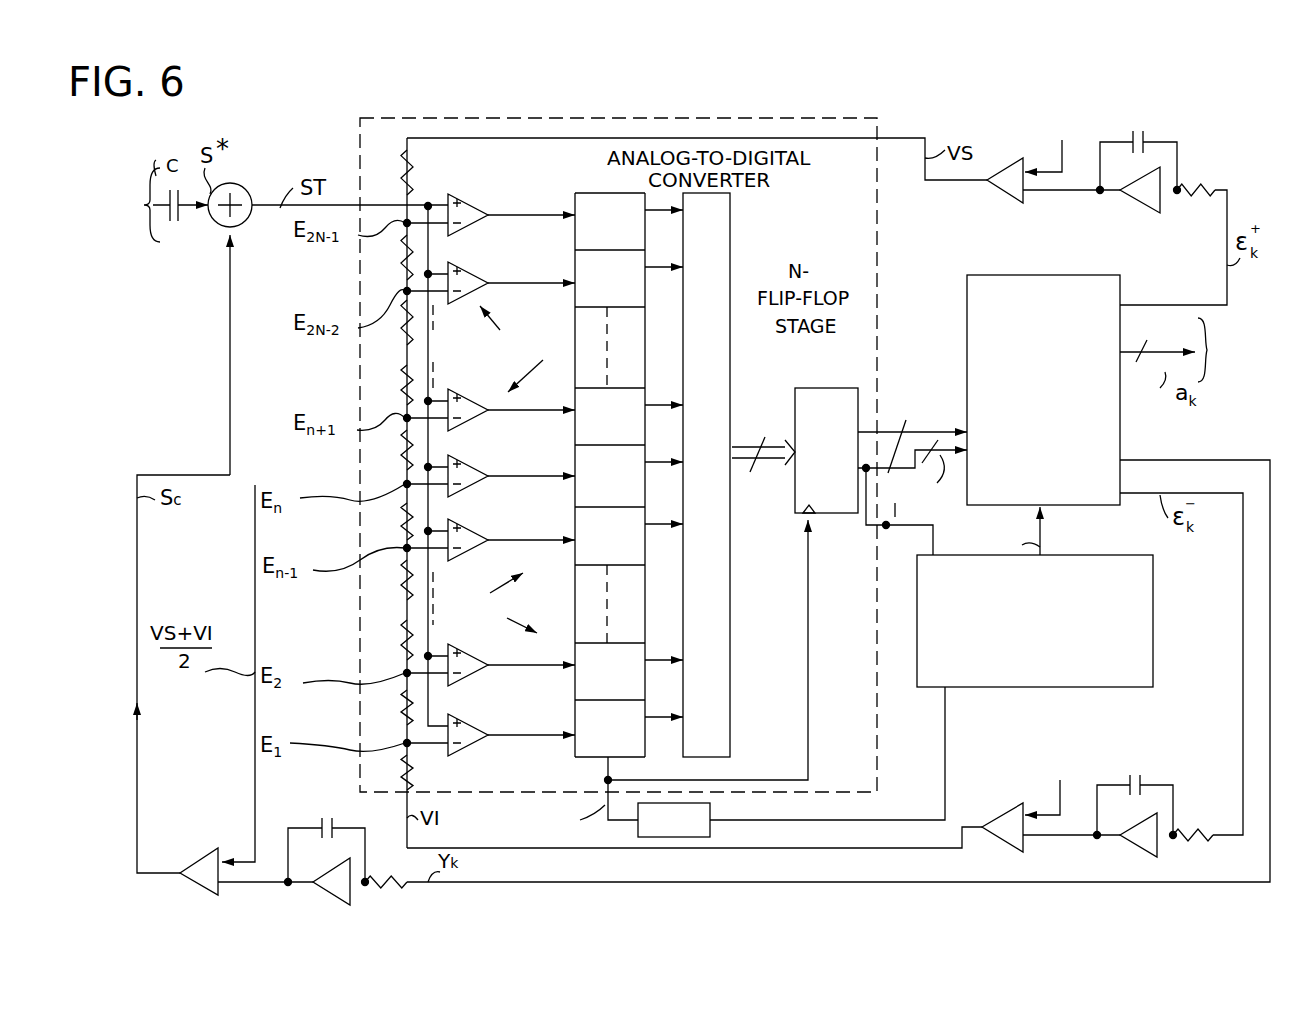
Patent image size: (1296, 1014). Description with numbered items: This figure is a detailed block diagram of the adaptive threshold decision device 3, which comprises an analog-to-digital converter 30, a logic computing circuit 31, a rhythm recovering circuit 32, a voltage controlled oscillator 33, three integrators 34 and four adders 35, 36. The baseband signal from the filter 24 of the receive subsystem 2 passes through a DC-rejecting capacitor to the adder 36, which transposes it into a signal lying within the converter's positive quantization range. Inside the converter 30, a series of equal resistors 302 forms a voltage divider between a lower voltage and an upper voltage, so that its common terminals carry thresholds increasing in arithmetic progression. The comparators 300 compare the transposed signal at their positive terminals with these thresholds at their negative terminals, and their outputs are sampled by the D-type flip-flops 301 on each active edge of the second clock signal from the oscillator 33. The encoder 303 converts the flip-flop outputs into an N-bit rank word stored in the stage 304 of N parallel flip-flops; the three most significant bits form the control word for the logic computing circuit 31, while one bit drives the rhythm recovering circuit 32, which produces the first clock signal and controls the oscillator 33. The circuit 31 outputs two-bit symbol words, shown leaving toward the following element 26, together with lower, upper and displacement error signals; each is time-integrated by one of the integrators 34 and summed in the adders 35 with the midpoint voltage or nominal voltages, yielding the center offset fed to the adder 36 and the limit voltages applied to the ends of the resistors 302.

The adaptive threshold decision device 3 is at (198, 298).
The filter 24 is at (145, 205).
The adder 36 is at (221, 222).
The analog-to-digital converter 30 is at (877, 268).
The resistors 302 is at (407, 160).
The comparators 300 is at (463, 192).
The D-type flip-flops 301 is at (575, 207).
The encoder 303 is at (731, 234).
The stage 304 is at (800, 475).
The logic computing circuit 31 is at (1065, 275).
The rhythm recovering circuit 32 is at (1155, 630).
The voltage controlled oscillator 33 is at (638, 828).
The integrators 34 is at (1150, 190).
The adders 35 is at (1000, 197).
The receive subsystem 2 is at (1157, 337).
The following stage 26 is at (1227, 350).